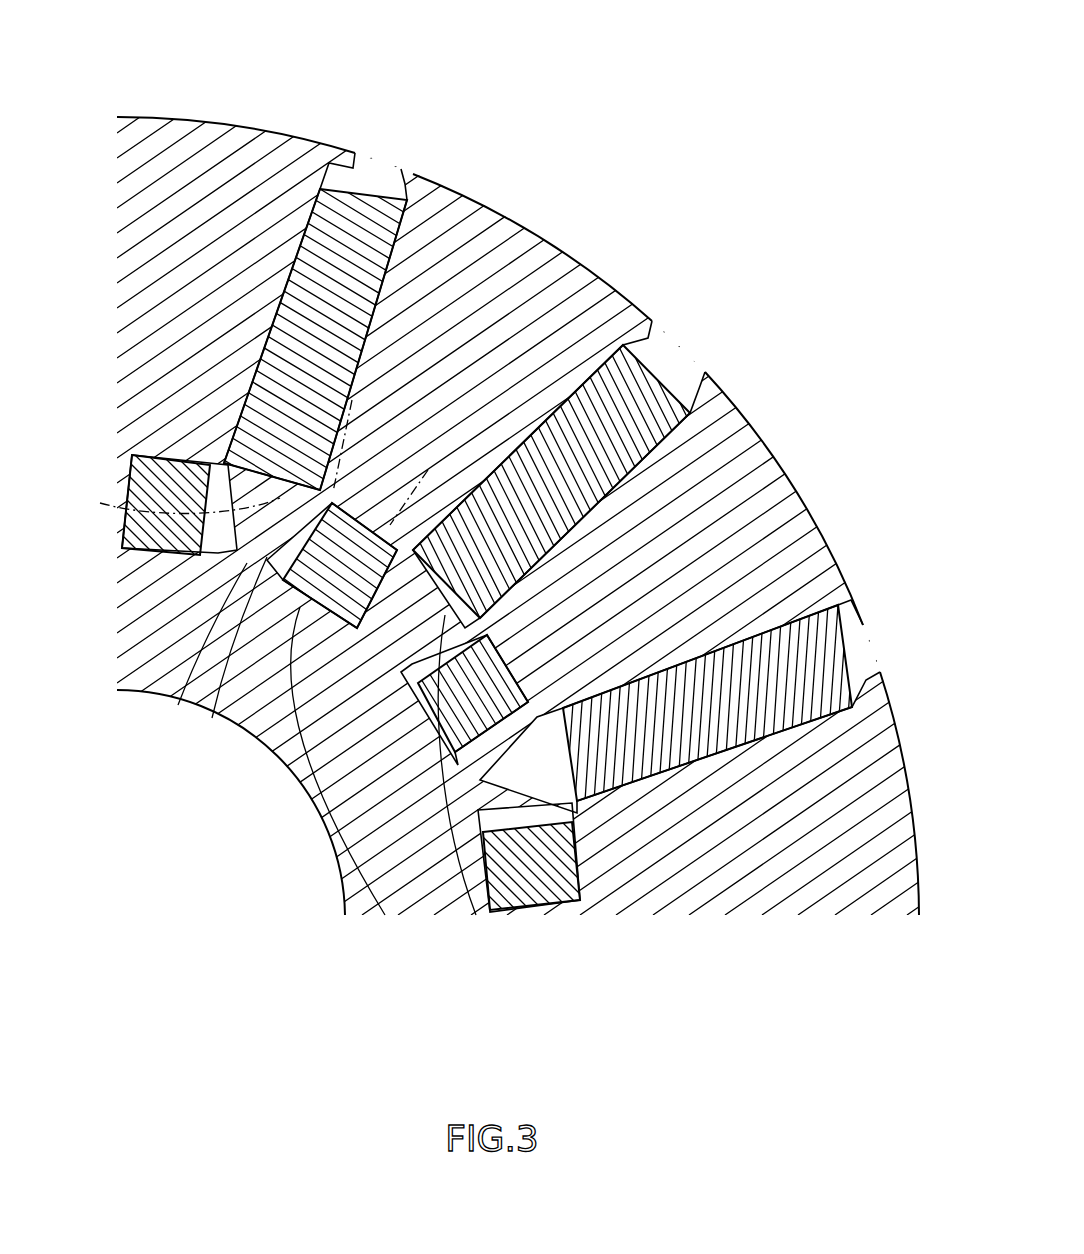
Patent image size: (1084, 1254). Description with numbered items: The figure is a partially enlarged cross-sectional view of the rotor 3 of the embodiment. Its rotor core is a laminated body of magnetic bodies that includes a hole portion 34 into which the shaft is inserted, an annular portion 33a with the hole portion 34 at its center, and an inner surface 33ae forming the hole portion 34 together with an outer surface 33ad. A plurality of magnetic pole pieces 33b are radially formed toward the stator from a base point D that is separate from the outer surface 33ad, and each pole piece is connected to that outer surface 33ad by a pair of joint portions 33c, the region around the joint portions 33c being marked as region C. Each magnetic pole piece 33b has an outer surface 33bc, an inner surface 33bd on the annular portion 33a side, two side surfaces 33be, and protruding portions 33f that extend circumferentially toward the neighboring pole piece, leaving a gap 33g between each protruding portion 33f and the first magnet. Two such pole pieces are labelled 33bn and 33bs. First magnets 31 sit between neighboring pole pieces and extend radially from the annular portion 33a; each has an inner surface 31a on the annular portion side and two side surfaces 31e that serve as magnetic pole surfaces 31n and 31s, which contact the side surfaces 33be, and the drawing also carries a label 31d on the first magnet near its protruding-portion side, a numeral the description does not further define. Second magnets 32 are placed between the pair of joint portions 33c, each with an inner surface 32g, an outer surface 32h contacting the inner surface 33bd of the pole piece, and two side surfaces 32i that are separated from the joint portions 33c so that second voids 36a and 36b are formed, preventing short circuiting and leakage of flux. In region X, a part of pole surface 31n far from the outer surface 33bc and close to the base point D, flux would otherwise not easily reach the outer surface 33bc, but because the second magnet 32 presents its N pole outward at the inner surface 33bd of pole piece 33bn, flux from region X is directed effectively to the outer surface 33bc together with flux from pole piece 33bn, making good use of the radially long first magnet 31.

The rotor 3 is at (612, 108).
The first magnet 31 is at (300, 152).
The inner surface of the first magnet 31a is at (510, 607).
The core outer portion 31d is at (670, 368).
The side surface of the first magnet 31e is at (556, 320).
The magnetic pole surface 31n is at (446, 197).
The magnetic pole surface 31s is at (735, 425).
The second magnet 32 is at (532, 890).
The inner surface of the second magnet 32g is at (305, 668).
The outer surface of the second magnet 32h is at (702, 940).
The side surface of the second magnet 32i is at (270, 468).
The annular portion 33a is at (398, 878).
The outer surface of the annular portion 33ad is at (238, 702).
The inner surface of the annular portion 33ae is at (348, 914).
The magnetic pole piece 33b is at (894, 745).
The outer surface of the magnetic pole piece 33bc is at (519, 224).
The inner surface of the magnetic pole piece 33bd is at (248, 440).
The side surface of the magnetic pole piece 33be is at (428, 205).
The magnetic pole piece 33bn is at (576, 260).
The magnetic pole piece 33bs is at (796, 490).
The joint portion 33c is at (128, 532).
The protruding portion 33f is at (340, 165).
The gap 33g is at (380, 200).
The hole portion 34 is at (328, 842).
The second void 36a is at (192, 688).
The second void 36b is at (330, 785).
The region C is at (104, 502).
The base point D is at (437, 412).
The region X is at (385, 462).